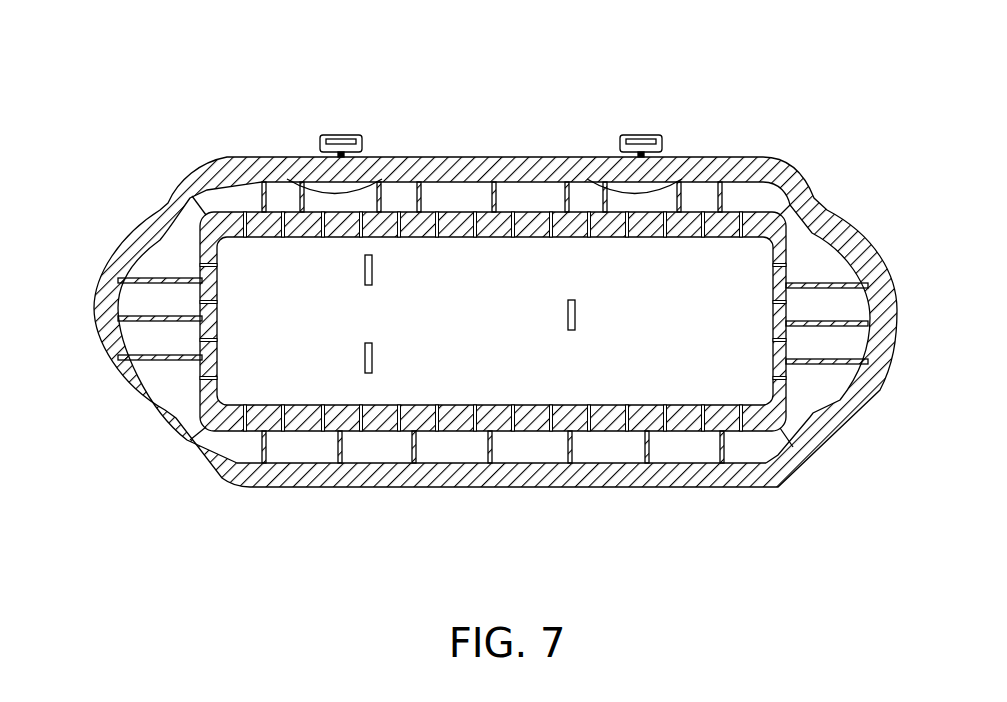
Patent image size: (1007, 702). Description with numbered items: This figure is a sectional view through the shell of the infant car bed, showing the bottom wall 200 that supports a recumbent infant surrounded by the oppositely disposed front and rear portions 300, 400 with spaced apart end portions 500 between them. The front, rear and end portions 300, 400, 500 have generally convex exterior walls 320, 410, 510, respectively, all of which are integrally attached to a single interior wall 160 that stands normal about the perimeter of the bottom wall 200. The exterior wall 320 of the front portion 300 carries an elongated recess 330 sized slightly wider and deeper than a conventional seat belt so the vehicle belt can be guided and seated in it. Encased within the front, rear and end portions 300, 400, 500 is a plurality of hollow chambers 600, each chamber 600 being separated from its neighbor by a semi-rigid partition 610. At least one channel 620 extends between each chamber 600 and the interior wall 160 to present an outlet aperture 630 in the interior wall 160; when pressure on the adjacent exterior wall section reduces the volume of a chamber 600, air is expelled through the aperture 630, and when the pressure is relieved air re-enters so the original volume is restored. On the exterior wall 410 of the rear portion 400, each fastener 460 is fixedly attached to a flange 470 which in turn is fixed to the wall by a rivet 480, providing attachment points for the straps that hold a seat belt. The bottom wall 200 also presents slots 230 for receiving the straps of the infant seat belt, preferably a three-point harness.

The interior wall 160 is at (655, 430).
The bottom wall 200 is at (484, 282).
The slots 230 is at (372, 268).
The front portion 300 is at (668, 487).
The exterior wall 320 is at (594, 487).
The recess 330 is at (478, 157).
The rear portion 400 is at (462, 157).
The exterior wall 410 is at (241, 157).
The fastener 460 is at (328, 136).
The flange 470 is at (357, 138).
The rivet 480 is at (346, 158).
The end portions 500 is at (104, 262).
The exterior wall 510 is at (123, 398).
The hollow chambers 600 is at (145, 297).
The semi-rigid partition 610 is at (318, 463).
The channel 620 is at (205, 302).
The outlet aperture 630 is at (205, 339).